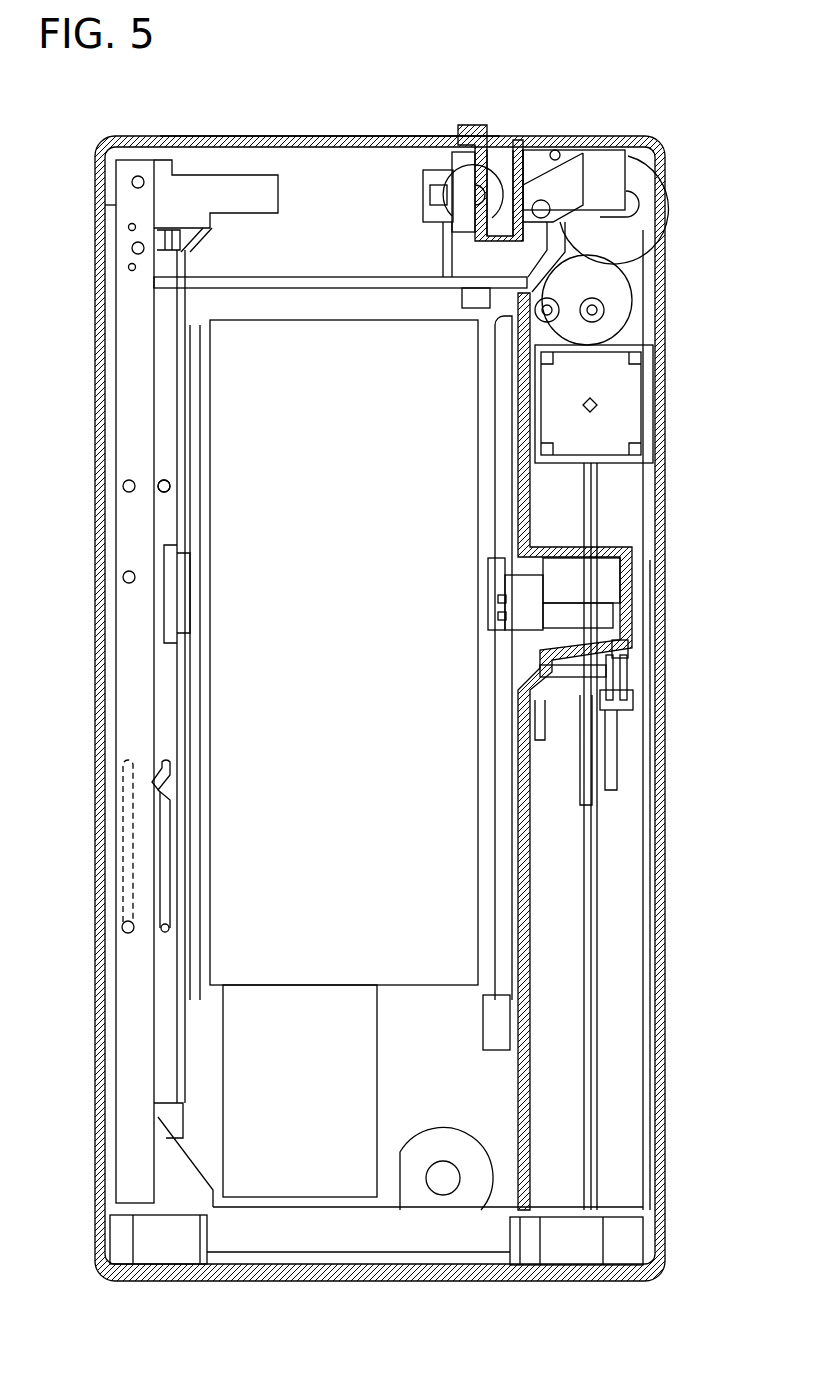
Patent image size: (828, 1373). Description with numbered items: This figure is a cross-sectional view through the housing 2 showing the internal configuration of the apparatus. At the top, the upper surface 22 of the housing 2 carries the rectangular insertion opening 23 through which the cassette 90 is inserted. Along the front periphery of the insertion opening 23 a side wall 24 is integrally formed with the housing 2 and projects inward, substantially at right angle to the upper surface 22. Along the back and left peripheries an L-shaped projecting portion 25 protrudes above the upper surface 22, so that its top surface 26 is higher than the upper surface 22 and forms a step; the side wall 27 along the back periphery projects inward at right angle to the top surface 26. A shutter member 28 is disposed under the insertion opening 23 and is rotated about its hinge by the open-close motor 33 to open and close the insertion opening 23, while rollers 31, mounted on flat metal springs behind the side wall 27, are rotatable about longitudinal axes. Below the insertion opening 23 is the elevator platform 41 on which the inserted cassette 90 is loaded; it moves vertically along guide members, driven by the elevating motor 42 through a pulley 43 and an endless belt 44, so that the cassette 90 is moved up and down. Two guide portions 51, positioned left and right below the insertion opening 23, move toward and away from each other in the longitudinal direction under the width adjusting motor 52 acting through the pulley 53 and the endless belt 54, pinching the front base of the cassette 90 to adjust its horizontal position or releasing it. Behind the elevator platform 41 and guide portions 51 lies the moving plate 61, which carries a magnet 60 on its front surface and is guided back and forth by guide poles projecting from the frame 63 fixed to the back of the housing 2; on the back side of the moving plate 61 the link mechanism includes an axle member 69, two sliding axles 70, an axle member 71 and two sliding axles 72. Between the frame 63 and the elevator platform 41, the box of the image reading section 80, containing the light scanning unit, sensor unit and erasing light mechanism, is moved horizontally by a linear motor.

The housing 2 is at (97, 305).
The upper surface 22 is at (217, 136).
The insertion opening 23 is at (520, 170).
The side wall 24 is at (565, 150).
The projecting portion 25 is at (462, 152).
The top surface 26 is at (478, 128).
The side wall 27 is at (440, 165).
The shutter member 28 is at (592, 238).
The rollers 31 is at (492, 190).
The open-close motor 33 is at (648, 180).
The elevator platform 41 is at (510, 1025).
The elevating motor 42 is at (622, 407).
The pulley 43 is at (612, 300).
The endless belt 44 is at (600, 490).
The guide portions 51 is at (520, 575).
The width adjusting motor 52 is at (622, 655).
The pulley 53 is at (628, 692).
The endless belt 54 is at (618, 675).
The magnet 60 is at (196, 965).
The moving plate 61 is at (158, 727).
The frame 63 is at (128, 607).
The axle member 69 is at (162, 480).
The sliding axles 70 is at (122, 927).
The axle member 71 is at (123, 486).
The sliding axles 72 is at (165, 933).
The image reading section 80 is at (455, 940).
The cassette 90 is at (510, 387).